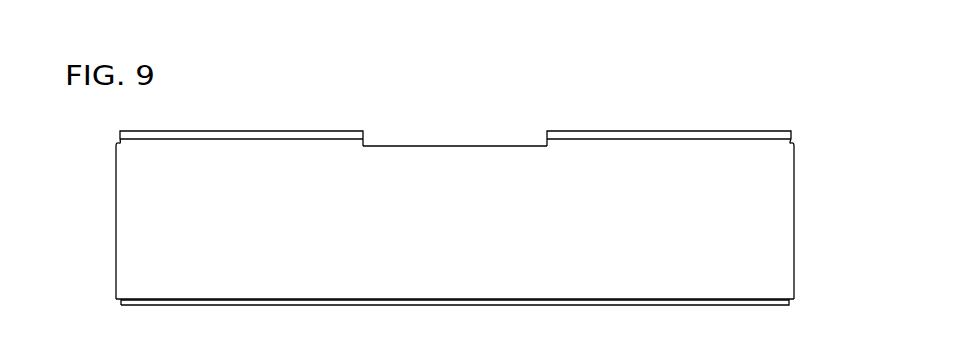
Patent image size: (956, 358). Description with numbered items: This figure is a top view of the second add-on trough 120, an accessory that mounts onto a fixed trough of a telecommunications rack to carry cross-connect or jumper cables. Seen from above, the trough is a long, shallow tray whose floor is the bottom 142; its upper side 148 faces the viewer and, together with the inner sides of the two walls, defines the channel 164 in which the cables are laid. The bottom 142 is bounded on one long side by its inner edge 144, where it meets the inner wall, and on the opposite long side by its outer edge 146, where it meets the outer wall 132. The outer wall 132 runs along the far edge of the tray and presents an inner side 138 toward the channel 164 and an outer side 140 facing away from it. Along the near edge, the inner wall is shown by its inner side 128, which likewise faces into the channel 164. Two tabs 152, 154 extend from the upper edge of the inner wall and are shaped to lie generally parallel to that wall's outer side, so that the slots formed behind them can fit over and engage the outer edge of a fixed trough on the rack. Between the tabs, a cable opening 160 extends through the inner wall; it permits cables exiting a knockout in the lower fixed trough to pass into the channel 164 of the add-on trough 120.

The second add-on trough 120 is at (102, 150).
The upper side of bottom 148 is at (468, 247).
The channel 164 is at (110, 220).
The bottom 142 is at (777, 228).
The cable opening 160 is at (430, 137).
The tab 154 is at (265, 133).
The inner edge of bottom 144 is at (232, 140).
The inner side of inner wall 128 is at (307, 140).
The tab 152 is at (692, 133).
The outer edge of bottom 146 is at (233, 302).
The inner side of outer wall 138 is at (674, 302).
The outer side of outer wall 140 is at (690, 302).
The outer wall 132 is at (758, 305).